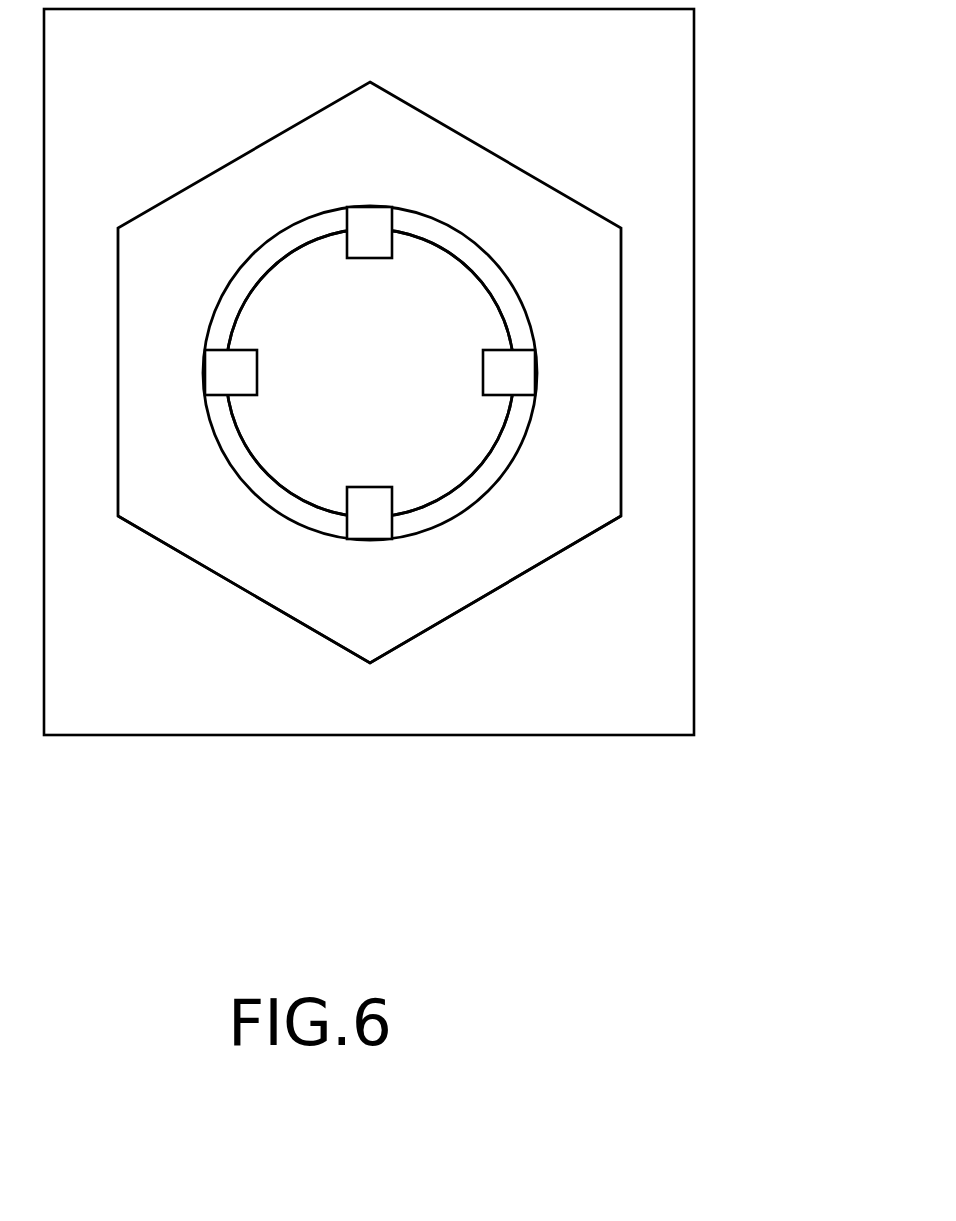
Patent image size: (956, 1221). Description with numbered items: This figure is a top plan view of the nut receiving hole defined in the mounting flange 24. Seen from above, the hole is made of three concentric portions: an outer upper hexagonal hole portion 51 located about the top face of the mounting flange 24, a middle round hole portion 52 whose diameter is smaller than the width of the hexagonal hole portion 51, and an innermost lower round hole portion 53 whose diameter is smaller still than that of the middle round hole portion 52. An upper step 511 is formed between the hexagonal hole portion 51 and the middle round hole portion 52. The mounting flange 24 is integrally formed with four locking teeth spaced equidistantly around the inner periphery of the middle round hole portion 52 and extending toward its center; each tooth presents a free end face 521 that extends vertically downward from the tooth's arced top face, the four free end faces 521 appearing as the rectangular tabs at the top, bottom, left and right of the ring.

The mounting flange 24 is at (672, 74).
The upper hexagonal hole portion 51 is at (407, 112).
The upper step 511 is at (373, 600).
The middle round hole portion 52 is at (492, 273).
The free end face 521 is at (482, 373).
The lower round hole portion 53 is at (460, 467).